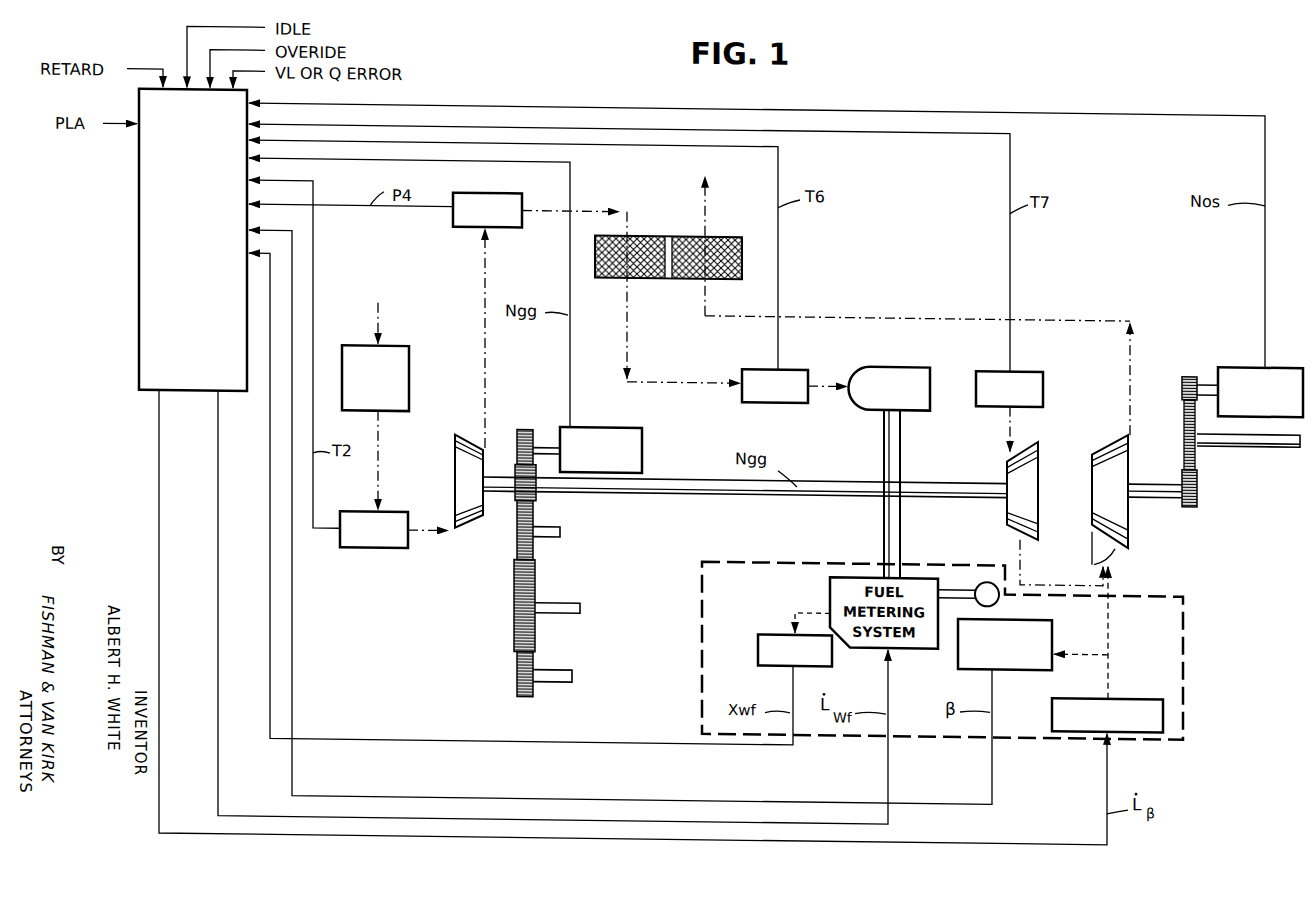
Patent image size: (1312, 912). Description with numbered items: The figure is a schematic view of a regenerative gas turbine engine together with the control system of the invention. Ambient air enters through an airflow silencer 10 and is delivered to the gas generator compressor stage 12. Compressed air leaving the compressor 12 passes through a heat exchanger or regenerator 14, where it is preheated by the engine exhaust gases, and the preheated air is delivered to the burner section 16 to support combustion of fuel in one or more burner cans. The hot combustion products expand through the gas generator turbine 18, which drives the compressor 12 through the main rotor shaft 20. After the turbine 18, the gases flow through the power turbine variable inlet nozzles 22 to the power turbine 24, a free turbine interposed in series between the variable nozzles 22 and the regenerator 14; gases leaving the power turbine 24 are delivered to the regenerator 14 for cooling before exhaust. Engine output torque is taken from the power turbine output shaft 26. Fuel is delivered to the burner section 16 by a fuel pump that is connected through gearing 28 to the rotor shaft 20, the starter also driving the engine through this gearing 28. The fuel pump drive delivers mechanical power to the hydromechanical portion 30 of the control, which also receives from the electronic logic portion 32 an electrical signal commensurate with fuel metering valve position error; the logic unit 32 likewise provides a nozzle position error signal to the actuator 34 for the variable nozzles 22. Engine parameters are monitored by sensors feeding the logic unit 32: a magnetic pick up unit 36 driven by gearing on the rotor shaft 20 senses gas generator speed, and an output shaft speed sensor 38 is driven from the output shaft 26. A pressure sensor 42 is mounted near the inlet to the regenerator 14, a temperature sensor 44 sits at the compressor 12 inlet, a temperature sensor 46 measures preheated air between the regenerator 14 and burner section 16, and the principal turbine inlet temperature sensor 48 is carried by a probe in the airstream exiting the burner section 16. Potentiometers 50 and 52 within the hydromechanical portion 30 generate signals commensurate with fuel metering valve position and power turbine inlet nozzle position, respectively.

The airflow silencer 10 is at (409, 383).
The gas generator compressor stage 12 is at (470, 522).
The regenerator 14 is at (640, 228).
The burner section 16 is at (895, 356).
The gas generator turbine 18 is at (1007, 515).
The main rotor shaft 20 is at (790, 488).
The power turbine variable inlet nozzles 22 is at (1121, 540).
The power turbine 24 is at (1118, 432).
The power turbine output shaft 26 is at (1178, 492).
The gearing 28 is at (541, 589).
The hydromechanical portion 30 is at (1193, 644).
The electronic logic portion 32 is at (137, 269).
The actuator 34 is at (1130, 685).
The magnetic pick up unit 36 is at (635, 420).
The power turbine output shaft speed sensor 38 is at (1235, 352).
The P4 sensor 42 is at (495, 187).
The T2 sensor 44 is at (372, 543).
The T6 sensor 46 is at (790, 360).
The gas generator turbine inlet temperature sensor 48 is at (1020, 359).
The fuel metering valve position signal means 50 is at (758, 633).
The power turbine inlet nozzle position signal means 52 is at (1020, 607).